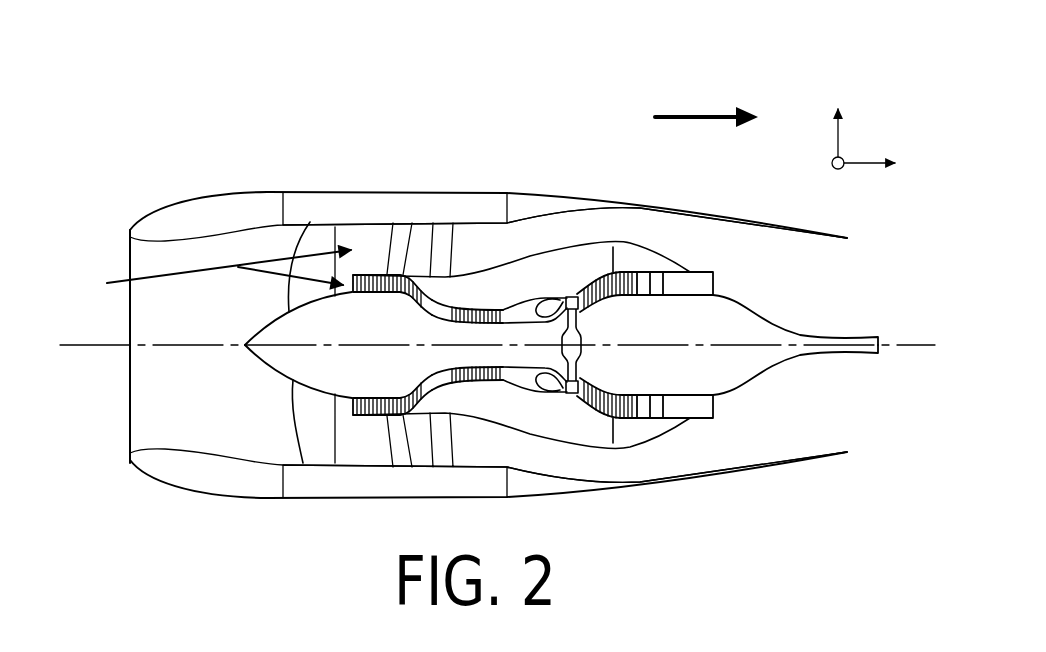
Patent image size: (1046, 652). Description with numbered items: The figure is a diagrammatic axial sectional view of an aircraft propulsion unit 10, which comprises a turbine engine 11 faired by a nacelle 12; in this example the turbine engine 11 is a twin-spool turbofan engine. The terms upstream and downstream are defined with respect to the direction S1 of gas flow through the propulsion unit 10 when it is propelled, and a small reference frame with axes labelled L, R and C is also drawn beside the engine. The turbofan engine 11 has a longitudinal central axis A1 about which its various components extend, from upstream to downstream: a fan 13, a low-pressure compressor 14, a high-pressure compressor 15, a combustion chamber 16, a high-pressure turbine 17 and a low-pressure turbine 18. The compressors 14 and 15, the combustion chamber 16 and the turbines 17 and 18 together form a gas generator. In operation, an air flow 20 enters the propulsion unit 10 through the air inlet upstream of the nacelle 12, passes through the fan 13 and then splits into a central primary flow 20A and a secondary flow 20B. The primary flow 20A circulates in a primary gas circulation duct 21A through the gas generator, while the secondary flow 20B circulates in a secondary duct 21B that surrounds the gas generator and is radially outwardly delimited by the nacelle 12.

The aircraft propulsion unit 10 is at (286, 150).
The turbine engine 11 is at (744, 282).
The nacelle 12 is at (402, 203).
The fan 13 is at (307, 417).
The low-pressure compressor 14 is at (372, 273).
The high-pressure compressor 15 is at (487, 306).
The combustion chamber 16 is at (545, 296).
The high-pressure turbine 17 is at (573, 293).
The low-pressure turbine 18 is at (638, 271).
The air flow 20 is at (112, 281).
The primary flow 20A is at (313, 262).
The secondary flow 20B is at (313, 258).
The primary gas circulation duct 21A is at (523, 382).
The secondary duct 21B is at (587, 428).
The longitudinal central axis A1 is at (78, 350).
The direction of gas flow S1 is at (705, 113).
The circumferential direction C is at (828, 180).
The radial direction R is at (840, 115).
The longitudinal direction L is at (881, 162).